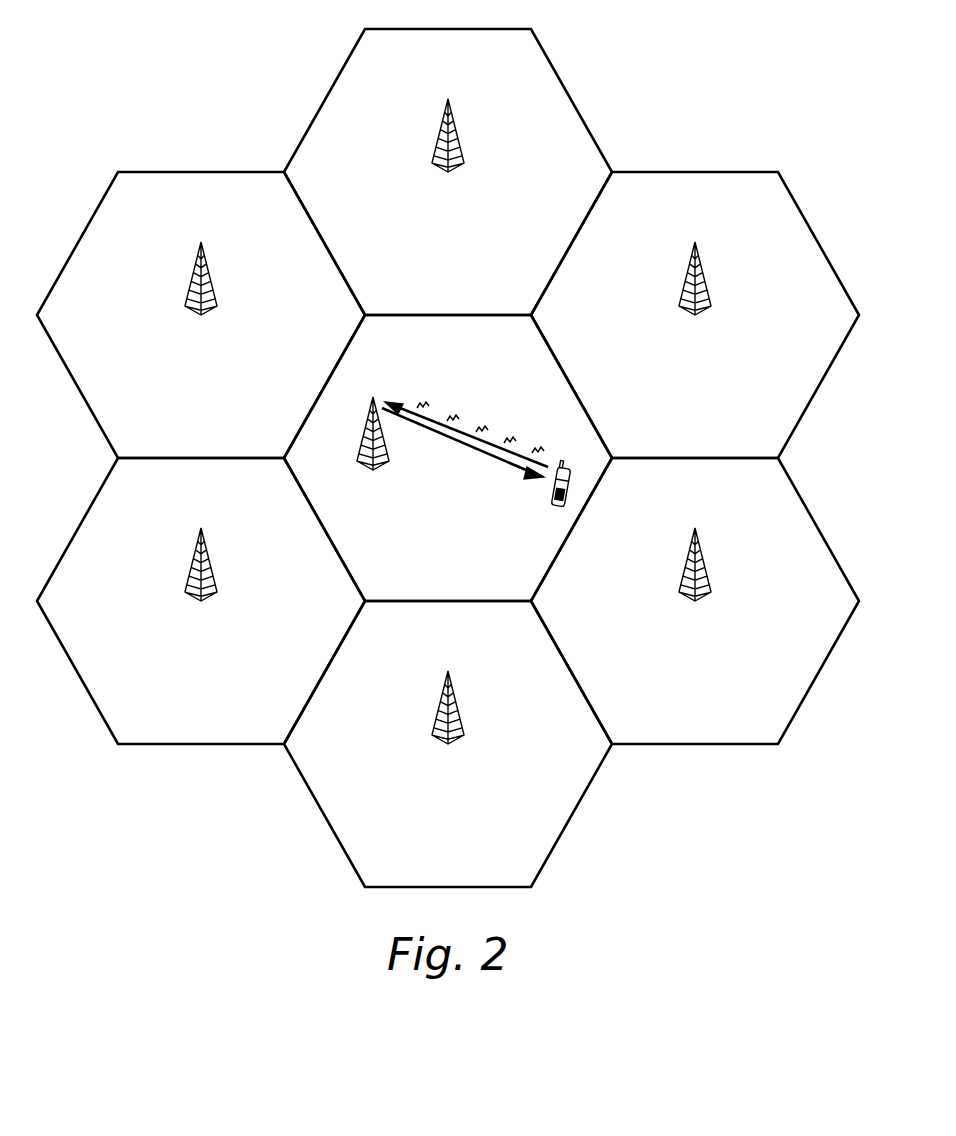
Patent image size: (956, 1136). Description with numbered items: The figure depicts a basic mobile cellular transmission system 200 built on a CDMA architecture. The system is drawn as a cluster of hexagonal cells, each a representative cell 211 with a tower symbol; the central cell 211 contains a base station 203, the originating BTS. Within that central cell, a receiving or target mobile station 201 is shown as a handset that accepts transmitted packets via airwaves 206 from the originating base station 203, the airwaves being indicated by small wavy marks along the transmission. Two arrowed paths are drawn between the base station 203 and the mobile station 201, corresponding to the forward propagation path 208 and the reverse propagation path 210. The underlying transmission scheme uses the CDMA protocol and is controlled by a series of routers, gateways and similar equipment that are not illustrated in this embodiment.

The mobile transmission system 200 is at (697, 76).
The receiving or target mobile station 201 is at (563, 507).
The base station 203 is at (360, 435).
The airwaves 206 is at (432, 406).
The forward propagation path 208 is at (410, 406).
The reverse propagation path 210 is at (472, 450).
The representative cell 211 is at (471, 256).